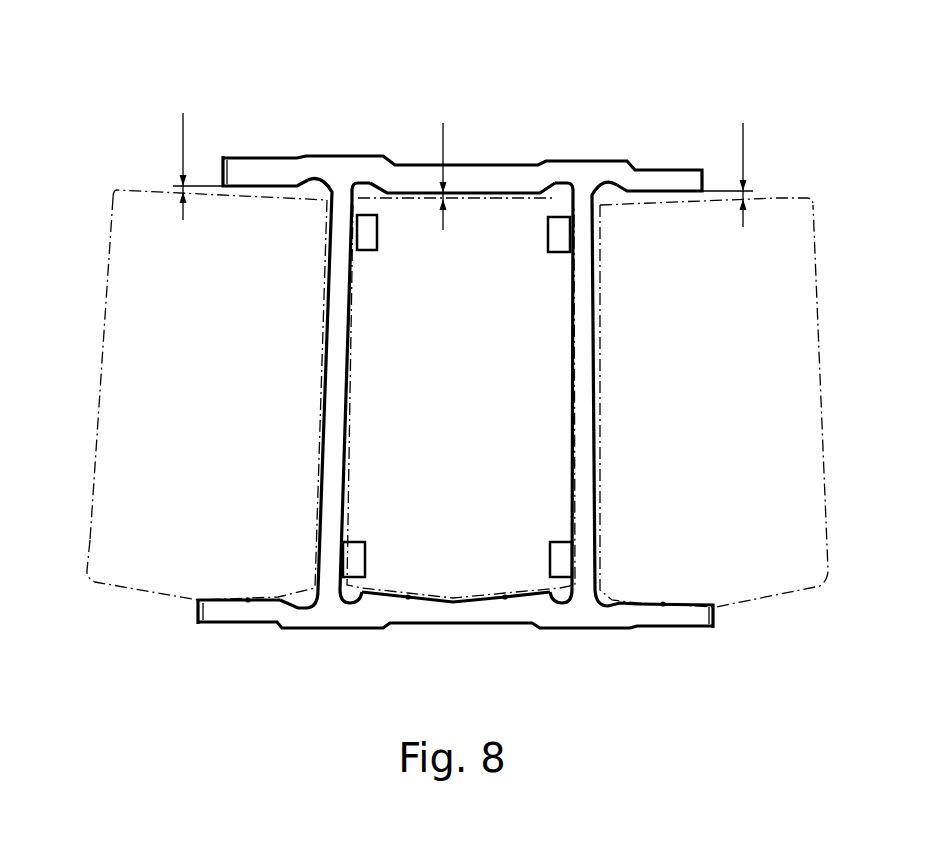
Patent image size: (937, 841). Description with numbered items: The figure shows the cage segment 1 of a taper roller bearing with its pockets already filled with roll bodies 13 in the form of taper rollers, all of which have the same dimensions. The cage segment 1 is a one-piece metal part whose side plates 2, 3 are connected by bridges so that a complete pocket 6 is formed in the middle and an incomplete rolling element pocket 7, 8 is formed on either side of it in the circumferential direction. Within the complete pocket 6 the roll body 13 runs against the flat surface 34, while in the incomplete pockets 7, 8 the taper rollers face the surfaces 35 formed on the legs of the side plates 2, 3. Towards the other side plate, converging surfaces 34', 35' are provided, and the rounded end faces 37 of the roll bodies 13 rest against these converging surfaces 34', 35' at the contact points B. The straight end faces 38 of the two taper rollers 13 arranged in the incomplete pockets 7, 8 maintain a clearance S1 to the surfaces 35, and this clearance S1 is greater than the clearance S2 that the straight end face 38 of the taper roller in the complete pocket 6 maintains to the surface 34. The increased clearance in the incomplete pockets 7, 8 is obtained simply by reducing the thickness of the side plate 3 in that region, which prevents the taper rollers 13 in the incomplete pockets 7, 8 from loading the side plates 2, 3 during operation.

The cage segment 1 is at (793, 78).
The side plate 2 is at (247, 173).
The side plate 3 is at (460, 617).
The pocket 6 is at (350, 605).
The incomplete rolling element pocket 7 is at (184, 606).
The incomplete rolling element pocket 8 is at (608, 608).
The roll body 13 is at (193, 413).
The flat surface 34 is at (462, 141).
The converging surface 34' is at (456, 654).
The surface 35 is at (265, 138).
The converging surface 35' is at (466, 651).
The rounded end face 37 is at (107, 590).
The straight end face 38 is at (130, 186).
The contact point B is at (248, 602).
The clearance S1 is at (464, 163).
The clearance S2 is at (459, 167).